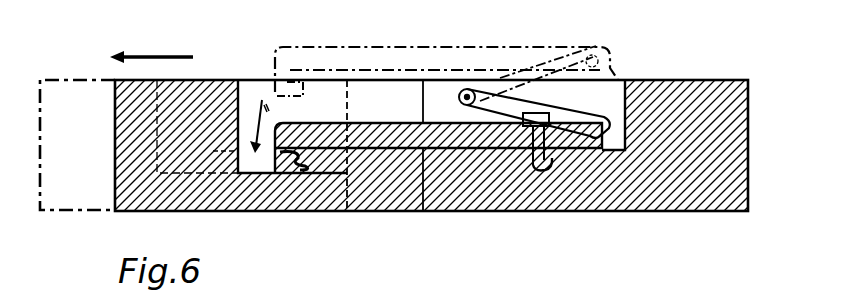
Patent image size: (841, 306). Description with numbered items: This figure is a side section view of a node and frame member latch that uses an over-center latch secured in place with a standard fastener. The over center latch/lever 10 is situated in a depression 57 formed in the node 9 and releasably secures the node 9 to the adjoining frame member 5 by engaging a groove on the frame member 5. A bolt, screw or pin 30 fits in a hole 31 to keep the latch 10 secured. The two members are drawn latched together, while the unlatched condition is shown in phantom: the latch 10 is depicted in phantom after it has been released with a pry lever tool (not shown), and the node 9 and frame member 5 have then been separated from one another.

The frame member 5 is at (113, 134).
The node 9 is at (690, 90).
The over center latch/lever 10 is at (397, 48).
The bolt, screw or pin 30 is at (538, 114).
The hole 31 is at (552, 170).
The depression 57 is at (257, 84).